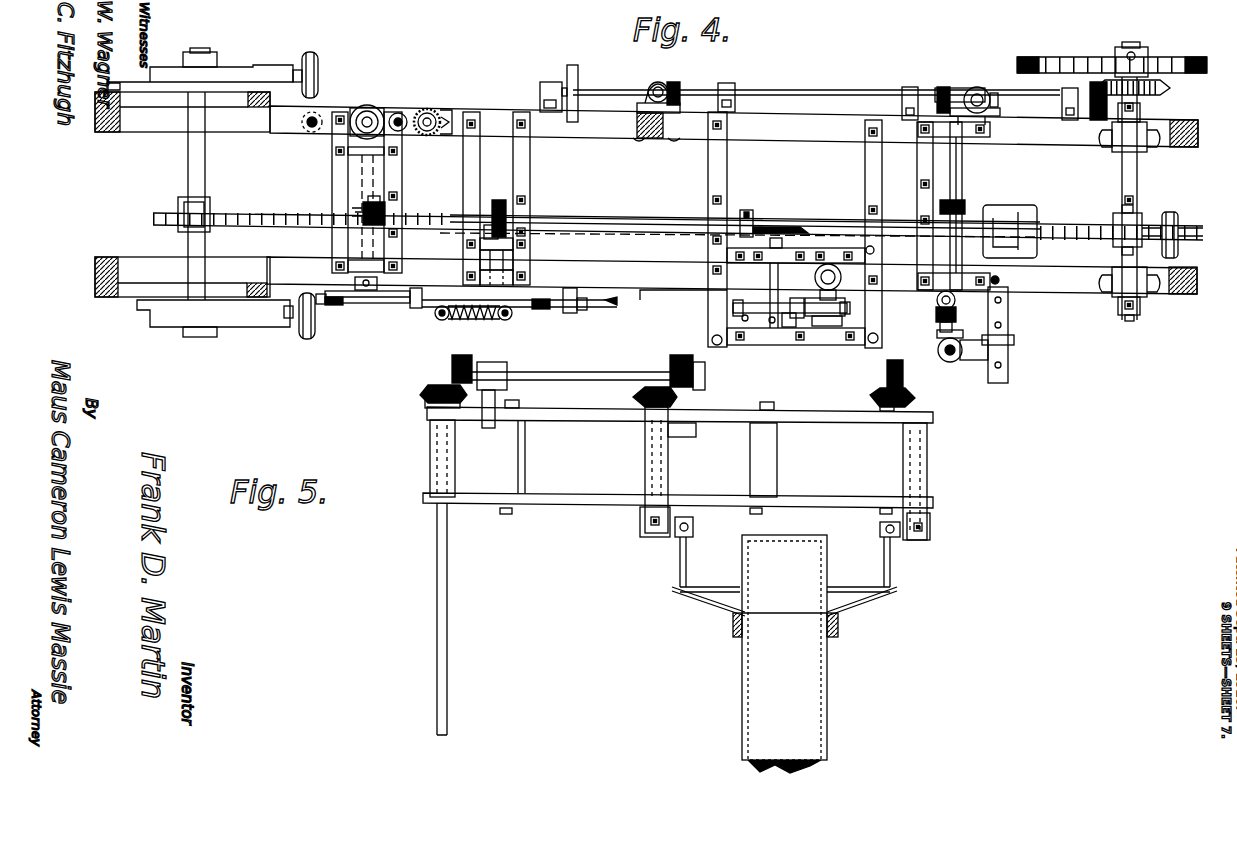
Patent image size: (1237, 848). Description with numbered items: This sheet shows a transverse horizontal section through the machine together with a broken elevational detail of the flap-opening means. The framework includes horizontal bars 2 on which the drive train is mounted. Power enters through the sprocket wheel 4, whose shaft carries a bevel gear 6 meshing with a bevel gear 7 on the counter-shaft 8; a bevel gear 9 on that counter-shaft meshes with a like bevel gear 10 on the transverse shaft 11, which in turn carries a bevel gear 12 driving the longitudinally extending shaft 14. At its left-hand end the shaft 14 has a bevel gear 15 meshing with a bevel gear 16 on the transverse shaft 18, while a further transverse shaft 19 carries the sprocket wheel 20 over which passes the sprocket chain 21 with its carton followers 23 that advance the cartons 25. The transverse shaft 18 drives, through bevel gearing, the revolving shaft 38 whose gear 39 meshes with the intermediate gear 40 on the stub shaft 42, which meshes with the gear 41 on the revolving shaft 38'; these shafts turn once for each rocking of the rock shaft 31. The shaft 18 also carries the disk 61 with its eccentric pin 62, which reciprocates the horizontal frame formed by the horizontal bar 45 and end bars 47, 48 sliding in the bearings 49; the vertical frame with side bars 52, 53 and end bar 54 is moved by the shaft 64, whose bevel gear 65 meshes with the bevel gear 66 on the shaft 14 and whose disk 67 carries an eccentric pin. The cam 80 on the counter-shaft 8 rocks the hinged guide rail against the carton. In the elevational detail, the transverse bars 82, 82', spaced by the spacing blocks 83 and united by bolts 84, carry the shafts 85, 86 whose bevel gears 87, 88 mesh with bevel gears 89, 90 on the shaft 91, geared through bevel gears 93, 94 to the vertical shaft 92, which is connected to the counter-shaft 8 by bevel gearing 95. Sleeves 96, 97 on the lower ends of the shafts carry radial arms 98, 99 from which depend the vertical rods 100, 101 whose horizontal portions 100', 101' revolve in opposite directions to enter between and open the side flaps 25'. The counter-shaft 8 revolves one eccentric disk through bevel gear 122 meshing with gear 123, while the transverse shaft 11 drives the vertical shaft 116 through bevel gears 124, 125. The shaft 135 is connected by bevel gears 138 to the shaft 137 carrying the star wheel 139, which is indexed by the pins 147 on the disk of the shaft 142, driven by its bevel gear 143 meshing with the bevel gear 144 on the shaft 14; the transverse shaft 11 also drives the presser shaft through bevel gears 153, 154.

In FIG. 4, the horizontal bars 2 is at (500, 114).
In FIG. 4, the sprocket wheel 4 is at (1078, 62).
In FIG. 4, the bevel gear 6 is at (1152, 94).
In FIG. 4, the bevel gear 7 is at (645, 140).
In FIG. 4, the counter-shaft 8 is at (865, 90).
In FIG. 4, the bevel gear 9 is at (950, 95).
In FIG. 4, the bevel gear 10 is at (962, 147).
In FIG. 4, the transverse shaft 11 is at (958, 176).
In FIG. 4, the bevel gear 12 is at (960, 206).
In FIG. 4, the longitudinally extending shaft 14 is at (596, 215).
In FIG. 4, the bevel gear 15 is at (403, 206).
In FIG. 4, the bevel gear 16 is at (360, 206).
In FIG. 4, the transverse shaft 18 is at (372, 172).
In FIG. 4, the transverse shaft 19 is at (205, 150).
In FIG. 4, the sprocket wheel 20 is at (210, 206).
In FIG. 4, the sprocket chain 21 is at (268, 213).
In FIG. 4, the carton followers 23 is at (1025, 215).
In FIG. 5, the cartons 25 is at (766, 654).
In FIG. 5, the side flaps 25' is at (784, 608).
In FIG. 4, the rock shaft 31 is at (318, 113).
In FIG. 4, the revolving shaft 38 is at (378, 97).
In FIG. 4, the revolving shaft 38' is at (459, 99).
In FIG. 4, the gear 39 is at (367, 105).
In FIG. 4, the intermediate gear 40 is at (427, 109).
In FIG. 4, the gear 41 is at (448, 121).
In FIG. 4, the stub shaft 42 is at (399, 113).
In FIG. 4, the horizontal bar 45 is at (597, 309).
In FIG. 4, the end bar 47 is at (617, 304).
In FIG. 4, the end bar 48 is at (323, 304).
In FIG. 4, the bearings 49 is at (415, 308).
In FIG. 4, the side bar 52 is at (506, 320).
In FIG. 4, the side bar 53 is at (441, 320).
In FIG. 4, the end bar 54 is at (480, 320).
In FIG. 4, the disk 61 is at (375, 305).
In FIG. 4, the pin 62 is at (336, 306).
In FIG. 4, the shaft 64 is at (463, 242).
In FIG. 4, the bevel gear 65 is at (487, 225).
In FIG. 4, the bevel gear 66 is at (505, 215).
In FIG. 4, the disk 67 is at (540, 309).
In FIG. 4, the cam 80 is at (578, 90).
In FIG. 5, the transverse bar 82 is at (678, 489).
In FIG. 5, the transverse bar 82' is at (680, 427).
In FIG. 5, the spacing blocks 83 is at (520, 467).
In FIG. 5, the bolts 84 is at (522, 407).
In FIG. 5, the shaft 85 is at (928, 468).
In FIG. 5, the shaft 86 is at (670, 466).
In FIG. 5, the bevel gear 87 is at (915, 399).
In FIG. 5, the bevel gear 88 is at (633, 398).
In FIG. 5, the bevel gear 89 is at (897, 362).
In FIG. 5, the bevel gear 90 is at (670, 366).
In FIG. 5, the shaft 91 is at (604, 372).
In FIG. 4, the vertical shaft 92 is at (654, 82).
In FIG. 5, the vertical shaft 92 is at (448, 578).
In FIG. 5, the bevel gear 93 is at (452, 362).
In FIG. 5, the bevel gear 94 is at (420, 392).
In FIG. 4, the bevel gearing 95 is at (678, 86).
In FIG. 5, the sleeve 96 is at (930, 530).
In FIG. 5, the sleeve 97 is at (640, 528).
In FIG. 5, the radial arm 98 is at (880, 530).
In FIG. 5, the radial arm 99 is at (693, 528).
In FIG. 5, the vertical rod 100 is at (912, 562).
In FIG. 5, the horizontal portion 100' is at (858, 576).
In FIG. 5, the vertical rod 101 is at (660, 562).
In FIG. 5, the horizontal portion 101' is at (710, 576).
In FIG. 4, the vertical shaft 116 is at (962, 88).
In FIG. 4, the bevel gear 122 is at (981, 88).
In FIG. 4, the gear 123 is at (975, 88).
In FIG. 4, the bevel gear 124 is at (963, 346).
In FIG. 4, the bevel gear 125 is at (968, 362).
In FIG. 4, the shaft 135 is at (874, 252).
In FIG. 4, the shaft 137 is at (843, 322).
In FIG. 4, the bevel gears 138 is at (815, 277).
In FIG. 4, the star wheel 139 is at (852, 307).
In FIG. 4, the shaft 142 is at (772, 279).
In FIG. 4, the bevel gear 143 is at (782, 228).
In FIG. 4, the bevel gear 144 is at (748, 214).
In FIG. 4, the pin 147 is at (735, 298).
In FIG. 4, the bevel gear 153 is at (960, 300).
In FIG. 4, the bevel gear 154 is at (962, 313).